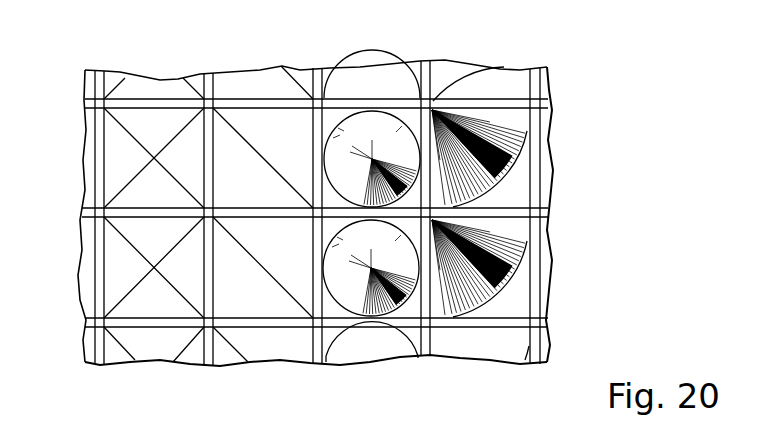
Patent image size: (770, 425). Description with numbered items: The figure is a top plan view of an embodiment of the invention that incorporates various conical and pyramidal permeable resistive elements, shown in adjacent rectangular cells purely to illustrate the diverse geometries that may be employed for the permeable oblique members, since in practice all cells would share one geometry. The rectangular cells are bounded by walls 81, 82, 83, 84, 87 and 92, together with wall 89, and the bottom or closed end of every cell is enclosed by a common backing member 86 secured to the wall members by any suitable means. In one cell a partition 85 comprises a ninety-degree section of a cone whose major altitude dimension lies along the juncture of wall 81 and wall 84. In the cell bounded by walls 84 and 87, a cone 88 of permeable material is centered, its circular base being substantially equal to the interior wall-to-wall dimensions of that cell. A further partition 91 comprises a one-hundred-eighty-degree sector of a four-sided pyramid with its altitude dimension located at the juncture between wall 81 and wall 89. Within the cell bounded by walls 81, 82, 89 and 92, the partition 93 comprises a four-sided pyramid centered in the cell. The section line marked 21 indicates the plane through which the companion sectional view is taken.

The wall 81 is at (548, 102).
The wall 82 is at (548, 212).
The wall 83 is at (533, 67).
The wall 84 is at (425, 61).
The partition 85 is at (525, 148).
The common backing member 86 is at (525, 178).
The wall 87 is at (318, 69).
The cone 88 is at (384, 143).
The wall 89 is at (207, 72).
The partition 91 is at (306, 169).
The wall 92 is at (100, 68).
The partition 93 is at (103, 157).
The section line 21- 21 is at (80, 315).